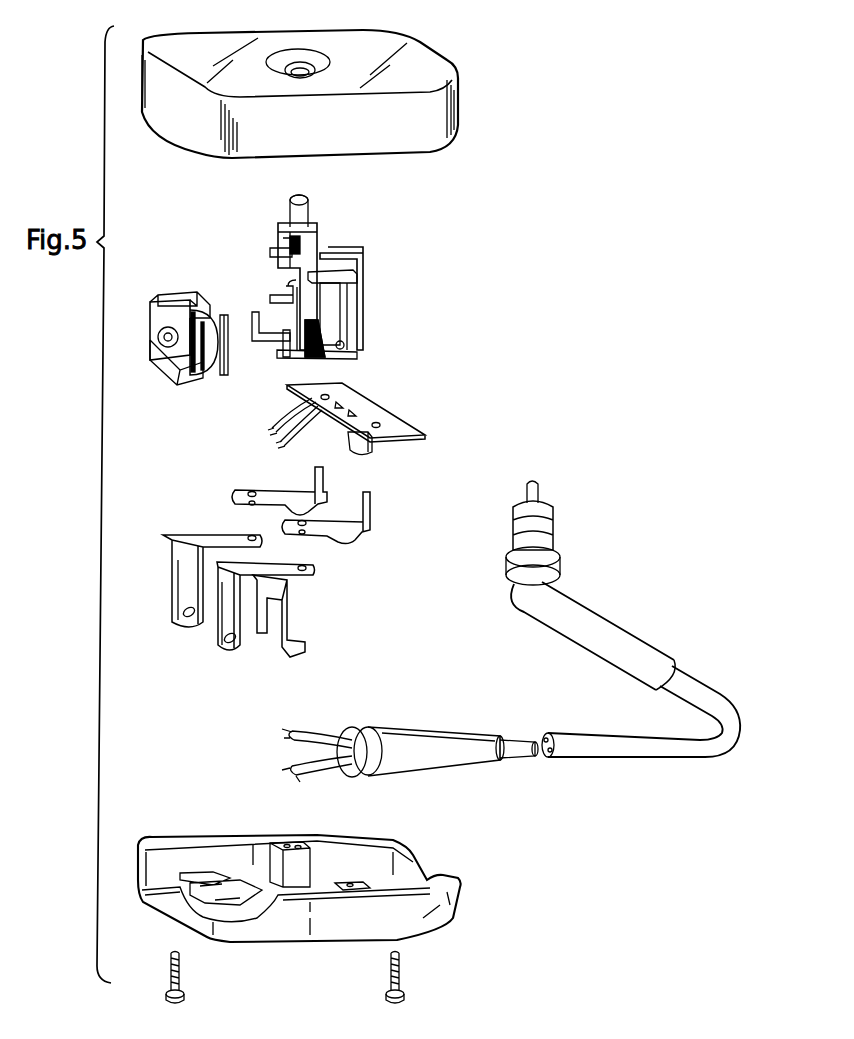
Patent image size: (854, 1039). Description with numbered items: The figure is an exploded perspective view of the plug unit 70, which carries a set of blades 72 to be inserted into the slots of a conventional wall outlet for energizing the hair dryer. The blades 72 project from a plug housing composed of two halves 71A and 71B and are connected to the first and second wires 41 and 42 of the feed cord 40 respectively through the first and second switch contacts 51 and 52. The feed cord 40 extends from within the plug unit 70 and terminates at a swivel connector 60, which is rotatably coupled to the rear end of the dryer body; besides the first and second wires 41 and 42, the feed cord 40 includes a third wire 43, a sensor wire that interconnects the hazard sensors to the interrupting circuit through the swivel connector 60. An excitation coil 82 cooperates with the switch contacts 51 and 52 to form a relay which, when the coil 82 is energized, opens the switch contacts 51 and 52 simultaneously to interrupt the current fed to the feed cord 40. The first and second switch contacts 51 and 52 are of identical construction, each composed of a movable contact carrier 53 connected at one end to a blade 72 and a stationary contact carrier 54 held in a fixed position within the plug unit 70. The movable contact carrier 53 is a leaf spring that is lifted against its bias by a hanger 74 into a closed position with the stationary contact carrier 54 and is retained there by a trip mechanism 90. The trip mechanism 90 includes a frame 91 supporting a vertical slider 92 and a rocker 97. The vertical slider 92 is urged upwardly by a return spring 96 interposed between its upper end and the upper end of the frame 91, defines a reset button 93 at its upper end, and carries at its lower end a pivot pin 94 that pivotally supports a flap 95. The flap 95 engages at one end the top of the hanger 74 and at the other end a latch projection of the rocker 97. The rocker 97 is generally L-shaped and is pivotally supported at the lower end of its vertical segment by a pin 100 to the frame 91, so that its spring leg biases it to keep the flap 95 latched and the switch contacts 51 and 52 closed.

The feed cord 40 is at (585, 758).
The first wire 41 is at (315, 738).
The second wire 42 is at (352, 772).
The third wire 43 is at (300, 762).
The first switch contact 51 is at (240, 482).
The second switch contact 52 is at (330, 543).
The movable contact carrier 53 is at (267, 572).
The stationary contact carrier 54 is at (330, 518).
The swivel connector 60 is at (574, 552).
The plug unit 70 is at (418, 40).
The plug housing half 71A is at (455, 115).
The plug housing half 71B is at (445, 918).
The blades 72 is at (230, 603).
The hanger 74 is at (270, 645).
The excitation coil 82 is at (208, 375).
The trip mechanism 90 is at (374, 257).
The frame 91 is at (366, 298).
The vertical slider 92 is at (315, 240).
The reset button 93 is at (305, 200).
The pivot pin 94 is at (293, 352).
The flap 95 is at (288, 300).
The return spring 96 is at (285, 243).
The rocker 97 is at (348, 315).
The pin 100 is at (357, 350).